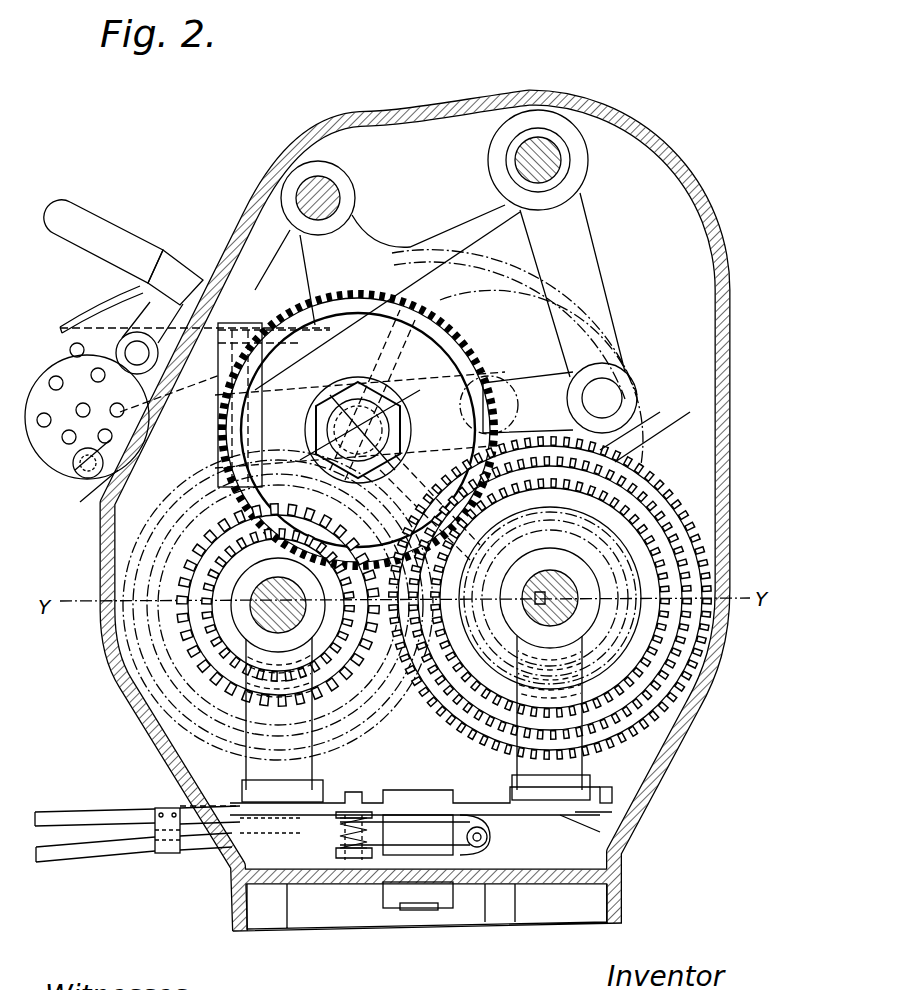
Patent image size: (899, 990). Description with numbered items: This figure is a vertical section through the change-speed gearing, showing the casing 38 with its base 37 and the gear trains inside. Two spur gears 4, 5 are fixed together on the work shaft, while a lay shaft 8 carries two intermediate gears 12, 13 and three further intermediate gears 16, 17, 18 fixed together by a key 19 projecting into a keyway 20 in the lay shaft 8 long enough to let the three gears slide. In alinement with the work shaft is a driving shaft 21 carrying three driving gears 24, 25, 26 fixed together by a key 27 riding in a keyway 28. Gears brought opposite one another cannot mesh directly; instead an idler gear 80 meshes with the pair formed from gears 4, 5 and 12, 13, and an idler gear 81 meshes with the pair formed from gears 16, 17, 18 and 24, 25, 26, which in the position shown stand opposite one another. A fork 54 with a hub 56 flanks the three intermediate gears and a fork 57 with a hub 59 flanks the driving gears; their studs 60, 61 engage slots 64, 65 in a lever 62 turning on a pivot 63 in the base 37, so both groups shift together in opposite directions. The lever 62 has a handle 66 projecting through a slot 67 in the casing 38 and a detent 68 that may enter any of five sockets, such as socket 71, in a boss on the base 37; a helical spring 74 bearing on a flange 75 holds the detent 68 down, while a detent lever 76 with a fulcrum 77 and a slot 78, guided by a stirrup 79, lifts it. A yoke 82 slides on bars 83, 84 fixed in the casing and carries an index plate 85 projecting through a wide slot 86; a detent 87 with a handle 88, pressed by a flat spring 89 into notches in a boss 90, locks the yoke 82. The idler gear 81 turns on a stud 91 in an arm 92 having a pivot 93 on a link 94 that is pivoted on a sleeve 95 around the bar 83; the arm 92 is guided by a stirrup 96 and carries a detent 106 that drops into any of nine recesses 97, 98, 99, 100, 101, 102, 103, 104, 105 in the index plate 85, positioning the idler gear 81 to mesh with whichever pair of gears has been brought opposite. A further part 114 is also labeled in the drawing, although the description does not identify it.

The spur gear 4 is at (165, 545).
The spur gear 5 is at (158, 570).
The lay shaft 8 is at (655, 468).
The intermediate gear 12 is at (650, 503).
The intermediate gear 13 is at (642, 421).
The intermediate gear 16 is at (664, 427).
The intermediate gear 17 is at (665, 482).
The intermediate gear 18 is at (585, 565).
The key 19 is at (462, 660).
The keyway 20 is at (540, 610).
The driving shaft 21 is at (150, 640).
The driving gear 24 is at (147, 612).
The driving gear 25 is at (250, 612).
The driving gear 26 is at (190, 670).
The key 27 is at (200, 555).
The keyway 28 is at (235, 545).
The base 37 is at (485, 890).
The casing 38 is at (712, 690).
The fork 54 is at (590, 766).
The hub 56 is at (600, 590).
The fork 57 is at (235, 800).
The hub 59 is at (315, 700).
The stud 60 is at (605, 830).
The stud 61 is at (250, 838).
The lever 62 is at (515, 856).
The pivot 63 is at (418, 910).
The slot 64 is at (612, 797).
The slot 65 is at (240, 818).
The handle 66 is at (80, 812).
The slot 67 is at (235, 803).
The detent 68 is at (362, 800).
The socket 71 is at (355, 860).
The helical spring 74 is at (343, 830).
The flange 75 is at (353, 850).
The detent lever 76 is at (70, 857).
The fulcrum 77 is at (477, 848).
The slot 78 is at (340, 818).
The stirrup 79 is at (160, 848).
The idler gear 80 is at (590, 293).
The idler gear 81 is at (470, 345).
The yoke 82 is at (470, 222).
The bar 83 is at (555, 172).
The bar 84 is at (330, 200).
The index plate 85 is at (52, 360).
The slot 86 is at (225, 325).
The detent 87 is at (175, 275).
The handle 88 is at (100, 228).
The flat spring 89 is at (105, 308).
The boss 90 is at (160, 336).
The stud 91 is at (400, 425).
The arm 92 is at (608, 340).
The pivot 93 is at (608, 392).
The link 94 is at (590, 255).
The sleeve 95 is at (560, 160).
The stirrup 96 is at (222, 405).
The recess or socket 97 is at (80, 502).
The recess or socket 98 is at (75, 470).
The recess or socket 99 is at (66, 444).
The recess or socket 100 is at (124, 412).
The recess or socket 101 is at (90, 410).
The recess or socket 102 is at (44, 427).
The recess or socket 103 is at (52, 378).
The recess or socket 104 is at (98, 368).
The recess or socket 105 is at (78, 343).
The detent 106 is at (104, 462).
The link 114 is at (512, 380).